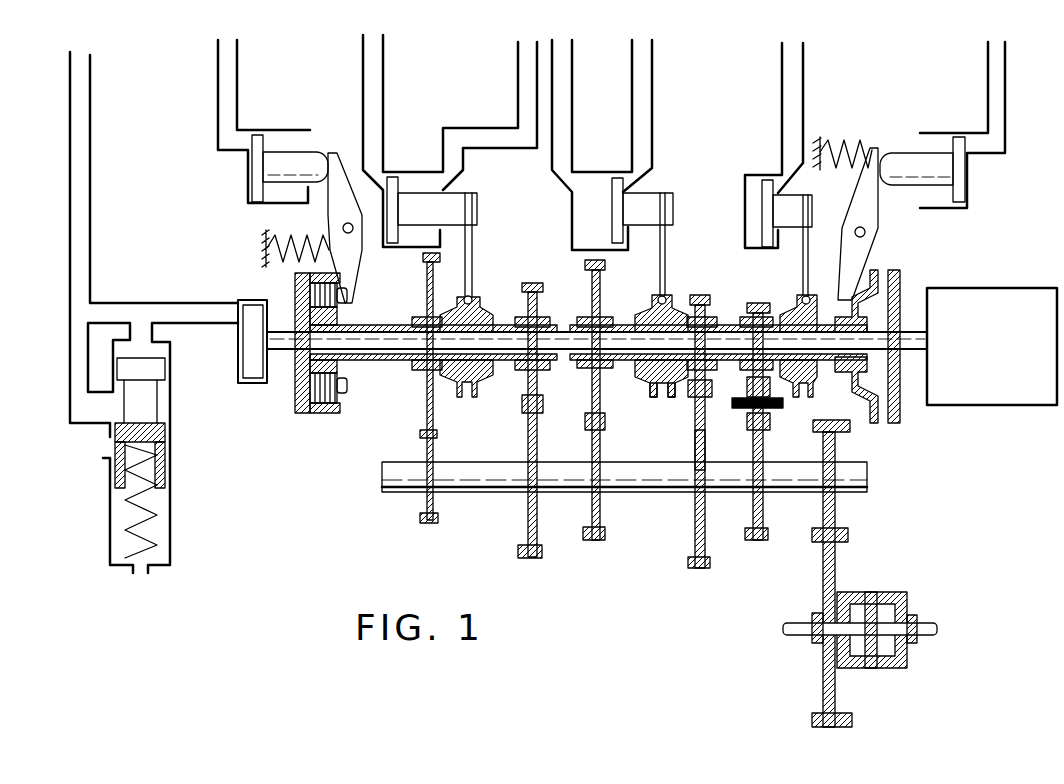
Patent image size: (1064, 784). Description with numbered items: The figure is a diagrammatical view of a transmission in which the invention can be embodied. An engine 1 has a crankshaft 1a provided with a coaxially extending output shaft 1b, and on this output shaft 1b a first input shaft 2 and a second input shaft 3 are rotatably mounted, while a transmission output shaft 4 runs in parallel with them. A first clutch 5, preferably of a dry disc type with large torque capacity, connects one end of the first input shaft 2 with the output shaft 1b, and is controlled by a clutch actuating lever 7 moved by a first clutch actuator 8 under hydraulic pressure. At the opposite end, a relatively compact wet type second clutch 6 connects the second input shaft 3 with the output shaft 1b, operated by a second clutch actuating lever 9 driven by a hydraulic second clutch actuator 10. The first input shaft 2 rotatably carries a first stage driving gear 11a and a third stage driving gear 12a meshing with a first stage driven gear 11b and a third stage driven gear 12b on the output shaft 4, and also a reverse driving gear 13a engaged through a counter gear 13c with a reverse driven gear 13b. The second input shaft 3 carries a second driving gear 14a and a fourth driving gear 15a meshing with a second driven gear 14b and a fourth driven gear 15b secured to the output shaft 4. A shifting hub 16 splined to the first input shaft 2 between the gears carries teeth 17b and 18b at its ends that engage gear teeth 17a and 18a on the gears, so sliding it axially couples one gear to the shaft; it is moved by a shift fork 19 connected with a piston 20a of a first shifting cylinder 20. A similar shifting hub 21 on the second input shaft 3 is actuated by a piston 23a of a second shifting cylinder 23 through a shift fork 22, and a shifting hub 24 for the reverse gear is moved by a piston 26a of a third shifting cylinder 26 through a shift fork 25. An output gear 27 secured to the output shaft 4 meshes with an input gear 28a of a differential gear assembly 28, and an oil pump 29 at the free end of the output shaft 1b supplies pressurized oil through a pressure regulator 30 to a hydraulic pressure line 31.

The engine 1 is at (1010, 398).
The crankshaft 1a is at (905, 354).
The output shaft 1b is at (571, 362).
The first input shaft 2 is at (722, 320).
The second input shaft 3 is at (398, 325).
The transmission output shaft 4 is at (479, 494).
The first clutch 5 is at (883, 422).
The second clutch 6 is at (346, 400).
The clutch actuating lever 7 is at (877, 212).
The first clutch actuator 8 is at (943, 128).
The second clutch actuating lever 9 is at (363, 262).
The second clutch actuator 10 is at (278, 130).
The first stage driving gear 11a is at (705, 297).
The first stage driven gear 11b is at (704, 432).
The third stage driving gear 12a is at (602, 282).
The third stage driven gear 12b is at (602, 443).
The reverse driving gear 13a is at (760, 303).
The reverse driven gear 13b is at (769, 445).
The counter gear 13c is at (770, 409).
The second driving gear 14a is at (540, 302).
The second driven gear 14b is at (537, 507).
The fourth driving gear 15a is at (427, 268).
The fourth driven gear 15b is at (438, 435).
The shifting hub 16 is at (672, 296).
The gear teeth 17a is at (670, 397).
The teeth 17b is at (690, 398).
The gear teeth 18a is at (647, 380).
The teeth 18b is at (653, 397).
The shift fork 19 is at (668, 247).
The first shifting cylinder 20 is at (597, 160).
The piston 20a is at (645, 200).
The shifting hub 21 is at (480, 306).
The shift fork 22 is at (474, 249).
The second shifting cylinder 23 is at (401, 158).
The piston 23a is at (452, 202).
The shifting hub 24 is at (808, 378).
The shift fork 25 is at (806, 268).
The third shifting cylinder 26 is at (757, 160).
The piston 26a is at (800, 206).
The output gear 27 is at (841, 437).
The differential gear assembly 28 is at (881, 589).
The input gear 28a is at (838, 548).
The oil pump 29 is at (238, 385).
The pressure regulator 30 is at (170, 425).
The hydraulic pressure line 31 is at (90, 210).